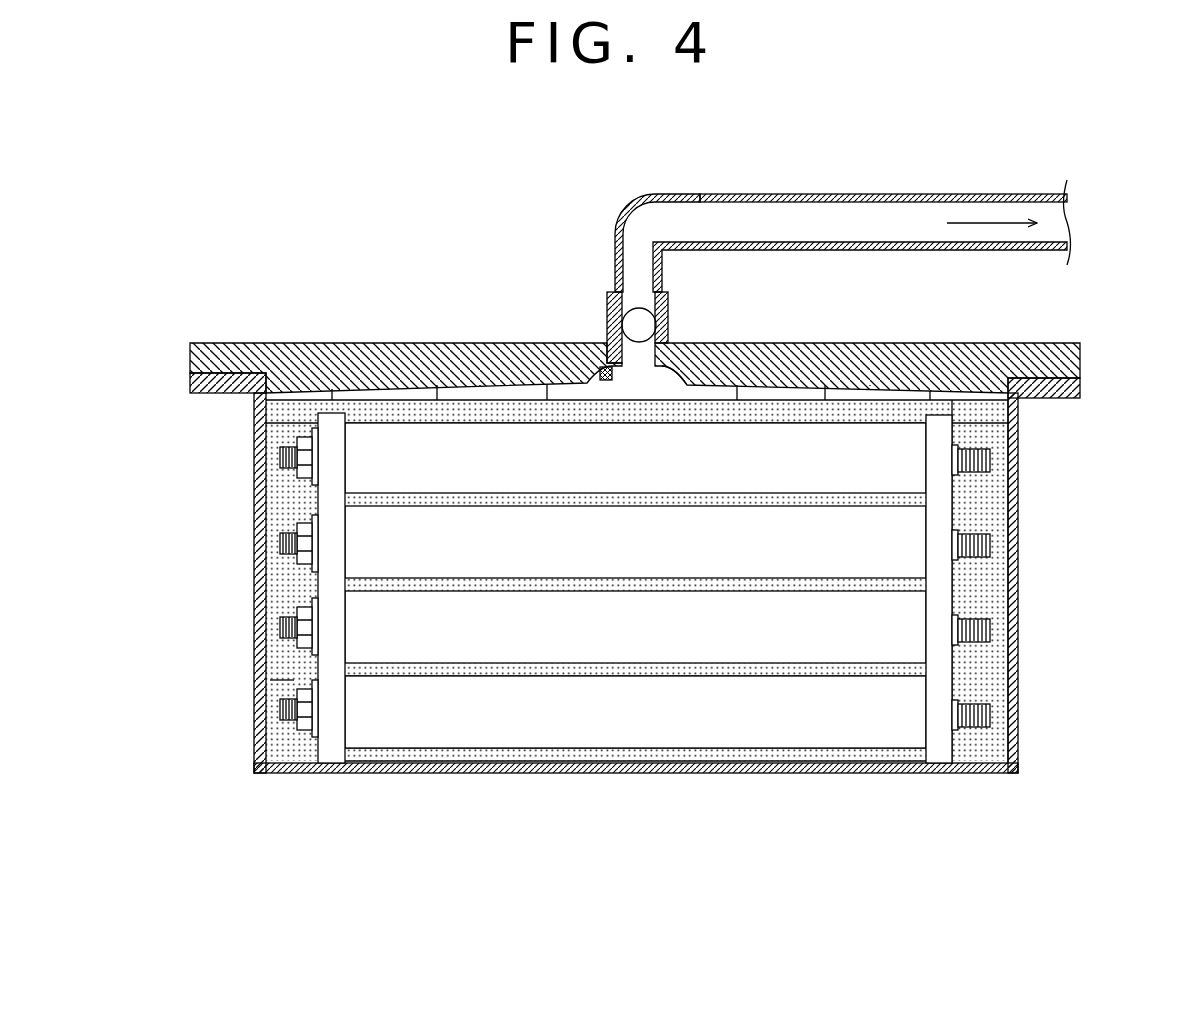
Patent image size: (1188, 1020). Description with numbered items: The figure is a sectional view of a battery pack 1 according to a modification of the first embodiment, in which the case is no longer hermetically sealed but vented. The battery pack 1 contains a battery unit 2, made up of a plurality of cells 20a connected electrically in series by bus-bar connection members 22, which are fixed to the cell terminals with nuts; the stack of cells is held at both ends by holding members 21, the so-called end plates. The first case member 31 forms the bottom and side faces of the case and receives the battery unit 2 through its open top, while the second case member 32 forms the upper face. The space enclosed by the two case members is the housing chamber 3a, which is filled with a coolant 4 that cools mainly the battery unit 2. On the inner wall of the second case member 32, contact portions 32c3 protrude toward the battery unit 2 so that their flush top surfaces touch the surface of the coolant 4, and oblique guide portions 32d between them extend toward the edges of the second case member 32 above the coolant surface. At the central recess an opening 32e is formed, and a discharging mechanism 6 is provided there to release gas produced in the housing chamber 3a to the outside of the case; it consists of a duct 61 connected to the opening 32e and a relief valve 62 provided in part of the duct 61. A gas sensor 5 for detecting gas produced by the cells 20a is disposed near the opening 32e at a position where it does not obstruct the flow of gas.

The battery pack 1 is at (1090, 468).
The battery unit 2 is at (605, 760).
The housing chamber 3a is at (985, 673).
The coolant 4 is at (282, 664).
The gas sensor 5 is at (597, 343).
The discharging mechanism 6 is at (810, 191).
The cell 20a is at (728, 720).
The holding member 21 is at (331, 750).
The connection member 22 is at (312, 580).
The first case member 31 is at (1018, 578).
The second case member 32 is at (1050, 343).
The contact portion 32c3 is at (437, 385).
The guide portion 32d is at (480, 385).
The opening 32e is at (668, 356).
The duct 61 is at (822, 194).
The valve 62 is at (616, 288).